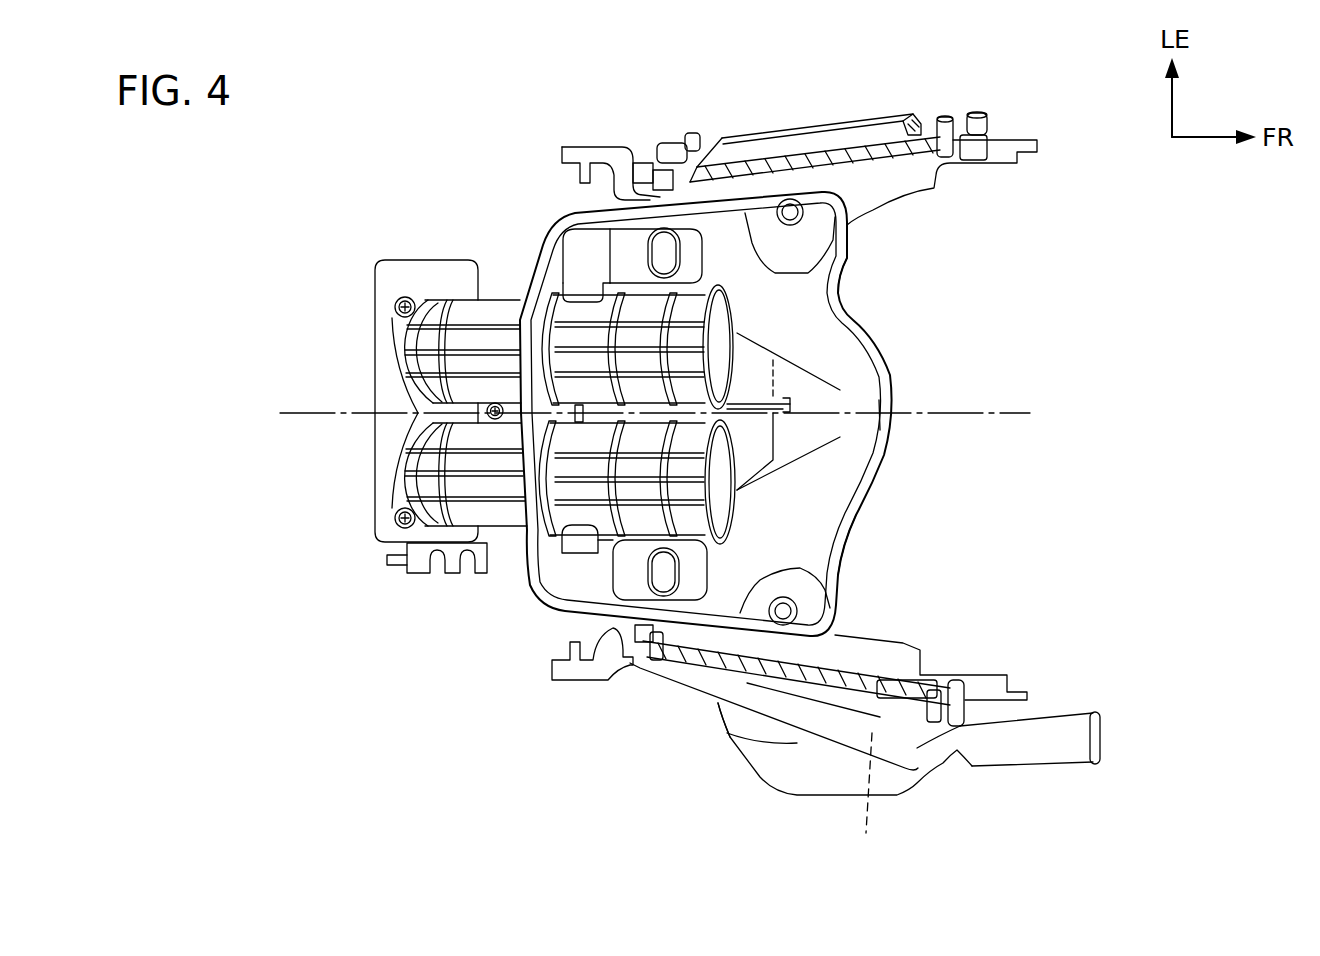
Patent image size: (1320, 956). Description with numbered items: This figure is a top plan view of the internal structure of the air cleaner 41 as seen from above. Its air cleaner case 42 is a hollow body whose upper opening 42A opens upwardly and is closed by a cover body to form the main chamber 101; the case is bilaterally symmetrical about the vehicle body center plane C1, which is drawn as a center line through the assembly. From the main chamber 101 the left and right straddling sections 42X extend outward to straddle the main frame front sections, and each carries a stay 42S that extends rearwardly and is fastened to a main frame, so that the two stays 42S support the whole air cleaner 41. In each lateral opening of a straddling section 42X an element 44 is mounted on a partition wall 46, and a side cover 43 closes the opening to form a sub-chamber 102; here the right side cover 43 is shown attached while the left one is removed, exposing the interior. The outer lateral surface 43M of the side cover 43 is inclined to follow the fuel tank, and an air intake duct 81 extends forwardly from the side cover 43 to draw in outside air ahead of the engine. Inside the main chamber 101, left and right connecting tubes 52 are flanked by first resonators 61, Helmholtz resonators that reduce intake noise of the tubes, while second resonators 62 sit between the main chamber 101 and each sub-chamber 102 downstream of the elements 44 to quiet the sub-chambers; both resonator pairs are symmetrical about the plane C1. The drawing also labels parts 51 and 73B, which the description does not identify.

The air cleaner 41 is at (533, 214).
The air cleaner case 42 is at (895, 378).
The upper opening 42A is at (853, 320).
The stay 42S is at (572, 138).
The straddling section 42X is at (847, 257).
The side cover 43 is at (917, 757).
The outer lateral surface 43M is at (697, 700).
The element 44 is at (827, 127).
The partition wall 46 is at (927, 117).
The cover plate 51 is at (373, 278).
The connecting tube 52 is at (720, 323).
The first resonator 61 is at (700, 255).
The second resonator 62 is at (823, 233).
The fastening member 73B is at (963, 120).
The air intake duct 81 is at (1073, 738).
The main chamber 101 is at (842, 468).
The sub-chamber 102 is at (884, 875).
The vehicle body center plane C1 is at (675, 415).